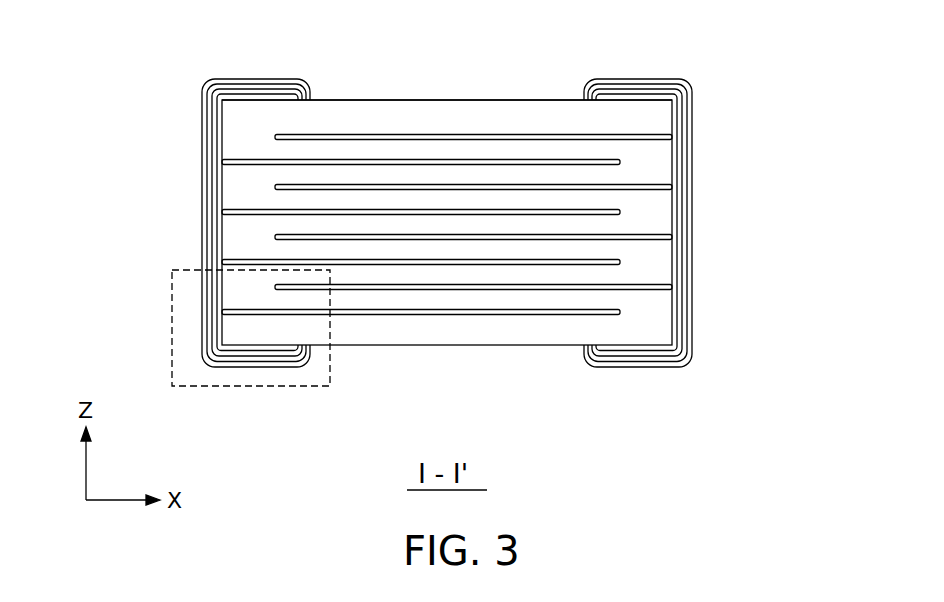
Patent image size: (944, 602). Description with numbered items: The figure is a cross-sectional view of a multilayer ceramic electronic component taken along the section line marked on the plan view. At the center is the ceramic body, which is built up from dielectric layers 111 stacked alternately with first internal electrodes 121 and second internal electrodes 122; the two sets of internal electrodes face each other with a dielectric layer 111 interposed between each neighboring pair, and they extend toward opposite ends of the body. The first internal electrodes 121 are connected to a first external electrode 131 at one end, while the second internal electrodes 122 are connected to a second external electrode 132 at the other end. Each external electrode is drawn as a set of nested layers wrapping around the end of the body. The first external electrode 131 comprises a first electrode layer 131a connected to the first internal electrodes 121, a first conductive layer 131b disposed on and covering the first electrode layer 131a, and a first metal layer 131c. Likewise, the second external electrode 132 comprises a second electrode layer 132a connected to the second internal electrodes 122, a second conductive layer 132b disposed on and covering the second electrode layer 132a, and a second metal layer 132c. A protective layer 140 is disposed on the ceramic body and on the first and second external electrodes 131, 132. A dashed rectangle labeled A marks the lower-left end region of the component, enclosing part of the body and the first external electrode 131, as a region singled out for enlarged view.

The dielectric layer 111 is at (438, 116).
The second internal electrode 122 is at (355, 135).
The first internal electrode 121 is at (527, 160).
The first external electrode 131 is at (177, 223).
The first electrode layer 131a is at (201, 143).
The first conductive layer 131b is at (201, 180).
The first metal layer 131c is at (201, 217).
The protective layer 140 is at (201, 254).
The second external electrode 132 is at (719, 223).
The second electrode layer 132a is at (695, 169).
The second conductive layer 132b is at (695, 208).
The second metal layer 132c is at (695, 244).
The enlarged region A is at (250, 387).